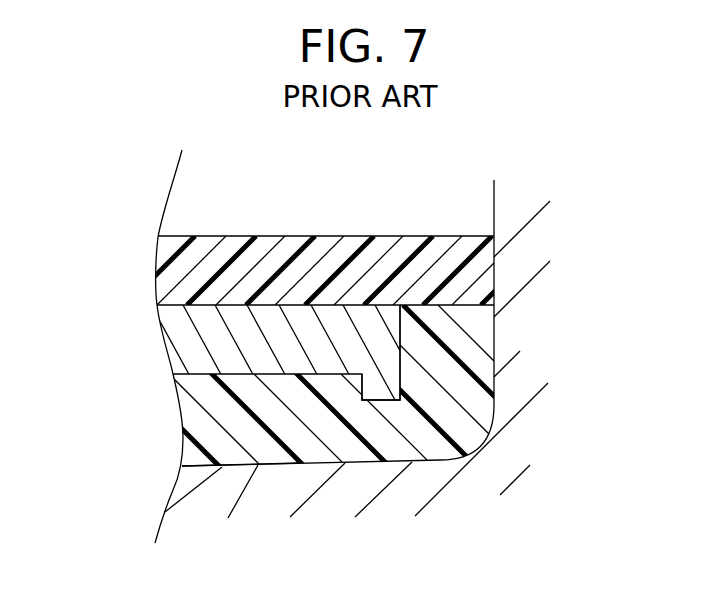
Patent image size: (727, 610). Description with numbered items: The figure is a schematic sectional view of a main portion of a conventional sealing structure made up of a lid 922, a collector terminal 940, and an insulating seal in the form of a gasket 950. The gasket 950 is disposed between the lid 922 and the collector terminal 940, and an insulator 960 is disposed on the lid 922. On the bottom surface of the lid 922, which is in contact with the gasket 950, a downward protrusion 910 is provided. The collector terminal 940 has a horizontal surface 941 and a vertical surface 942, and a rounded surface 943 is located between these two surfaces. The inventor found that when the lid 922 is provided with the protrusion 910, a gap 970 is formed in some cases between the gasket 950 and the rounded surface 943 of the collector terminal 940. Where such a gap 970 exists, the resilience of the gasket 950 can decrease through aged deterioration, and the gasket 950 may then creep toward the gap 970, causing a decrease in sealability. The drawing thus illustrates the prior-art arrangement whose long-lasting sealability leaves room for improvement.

The insulator 960 is at (162, 252).
The lid 922 is at (178, 343).
The insulating seal (gasket) 950 is at (190, 415).
The protrusion 910 is at (402, 381).
The collector terminal 940 is at (537, 223).
The vertical surface 942 is at (490, 276).
The rounded surface 943 is at (498, 438).
The gap 970 is at (487, 436).
The horizontal surface 941 is at (236, 468).